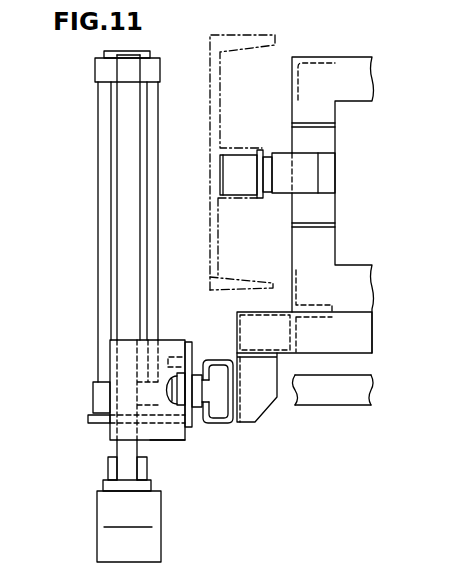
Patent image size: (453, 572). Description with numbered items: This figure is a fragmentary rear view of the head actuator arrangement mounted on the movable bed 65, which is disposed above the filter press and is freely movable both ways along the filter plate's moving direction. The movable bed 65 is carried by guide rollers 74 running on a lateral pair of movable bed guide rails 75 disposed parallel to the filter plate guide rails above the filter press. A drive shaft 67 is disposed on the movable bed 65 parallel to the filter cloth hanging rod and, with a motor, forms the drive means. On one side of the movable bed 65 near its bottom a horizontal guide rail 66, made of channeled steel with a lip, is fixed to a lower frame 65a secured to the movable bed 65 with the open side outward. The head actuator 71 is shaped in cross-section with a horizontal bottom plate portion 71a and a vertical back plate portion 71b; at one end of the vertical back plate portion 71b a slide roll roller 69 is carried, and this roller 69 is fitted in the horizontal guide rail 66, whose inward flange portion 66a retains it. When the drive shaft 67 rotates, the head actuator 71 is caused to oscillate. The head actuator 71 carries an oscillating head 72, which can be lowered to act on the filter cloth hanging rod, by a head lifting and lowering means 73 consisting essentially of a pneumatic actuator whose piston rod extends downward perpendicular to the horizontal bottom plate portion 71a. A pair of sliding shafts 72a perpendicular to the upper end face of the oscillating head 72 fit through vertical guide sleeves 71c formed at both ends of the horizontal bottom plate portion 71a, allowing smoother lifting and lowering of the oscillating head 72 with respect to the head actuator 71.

The movable bed 65 is at (329, 57).
The lower frame 65a is at (315, 342).
The horizontal guide rail 66 is at (238, 424).
The inward flange portion 66a is at (203, 358).
The drive shaft 67 is at (355, 398).
The slide roll roller 69 is at (220, 410).
The head actuator 71 is at (97, 351).
The horizontal bottom plate portion 71a is at (89, 418).
The vertical back plate portion 71b is at (188, 342).
The vertical guide sleeves 71c is at (172, 441).
The oscillating head 72 is at (97, 500).
The sliding shafts 72a is at (117, 448).
The head lifting and lowering means 73 is at (111, 229).
The guide rollers 74 is at (240, 185).
The movable bed guide rails 75 is at (222, 142).